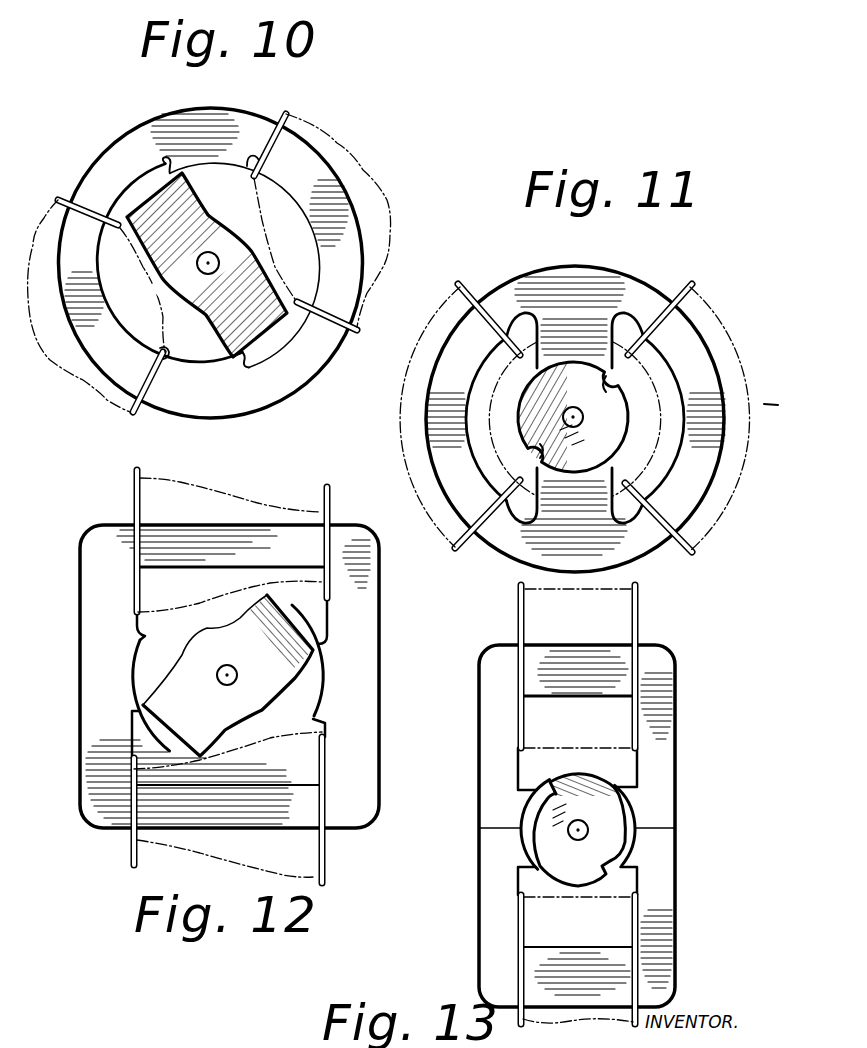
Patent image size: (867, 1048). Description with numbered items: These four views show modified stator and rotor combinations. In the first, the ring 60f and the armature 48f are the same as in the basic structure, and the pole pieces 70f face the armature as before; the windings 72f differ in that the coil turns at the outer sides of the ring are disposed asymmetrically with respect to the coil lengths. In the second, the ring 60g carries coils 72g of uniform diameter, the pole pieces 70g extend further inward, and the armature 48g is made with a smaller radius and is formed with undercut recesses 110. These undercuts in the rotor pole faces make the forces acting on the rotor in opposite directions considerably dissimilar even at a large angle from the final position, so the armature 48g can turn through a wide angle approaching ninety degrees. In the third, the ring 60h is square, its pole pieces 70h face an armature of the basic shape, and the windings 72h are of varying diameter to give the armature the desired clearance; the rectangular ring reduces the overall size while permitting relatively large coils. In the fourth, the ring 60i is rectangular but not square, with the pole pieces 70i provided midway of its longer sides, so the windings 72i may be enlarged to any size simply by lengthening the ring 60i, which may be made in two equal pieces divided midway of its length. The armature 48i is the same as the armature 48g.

In FIG. 10, the ring 60f is at (97, 150).
In FIG. 10, the windings 72f is at (358, 152).
In FIG. 10, the pole pieces 70f is at (201, 359).
In FIG. 10, the armature 48f is at (240, 199).
In FIG. 11, the ring 60g is at (498, 280).
In FIG. 11, the coils 72g is at (716, 286).
In FIG. 11, the pole pieces 70g is at (550, 497).
In FIG. 11, the armature 48g is at (530, 418).
In FIG. 11, the undercut recesses 110 is at (610, 375).
In FIG. 12, the ring 60h is at (80, 840).
In FIG. 12, the windings 72h is at (172, 485).
In FIG. 12, the pole pieces 70h is at (145, 637).
In FIG. 13, the ring 60i is at (470, 902).
In FIG. 13, the windings 72i is at (628, 615).
In FIG. 13, the pole pieces 70i is at (527, 790).
In FIG. 13, the armature 48i is at (623, 772).